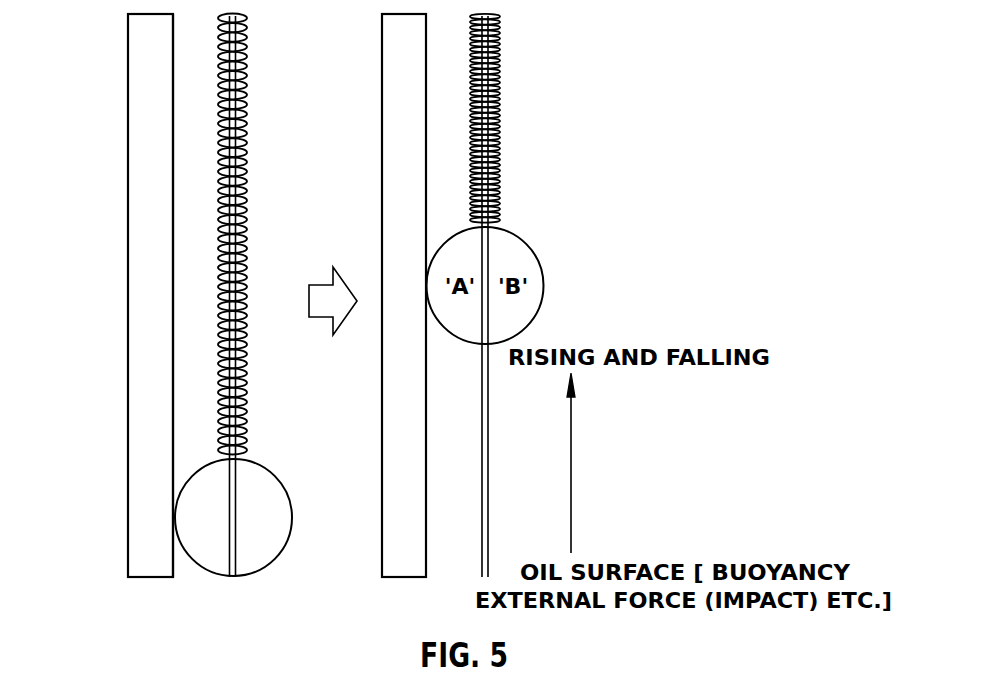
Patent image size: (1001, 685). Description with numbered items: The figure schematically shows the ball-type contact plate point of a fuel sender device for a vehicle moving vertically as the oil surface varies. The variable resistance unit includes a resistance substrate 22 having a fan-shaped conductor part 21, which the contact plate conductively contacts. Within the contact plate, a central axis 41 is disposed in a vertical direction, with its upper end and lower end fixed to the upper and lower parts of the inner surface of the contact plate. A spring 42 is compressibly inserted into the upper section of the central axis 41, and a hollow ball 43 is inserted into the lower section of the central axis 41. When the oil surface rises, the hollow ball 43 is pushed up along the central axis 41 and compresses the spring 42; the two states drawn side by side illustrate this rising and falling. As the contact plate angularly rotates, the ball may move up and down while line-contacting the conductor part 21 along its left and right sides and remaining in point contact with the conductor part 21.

The conductor part 21 is at (173, 403).
The resistance substrate 22 is at (118, 327).
The central axis 41 is at (244, 390).
The spring 42 is at (246, 418).
The hollow ball 43 is at (255, 470).